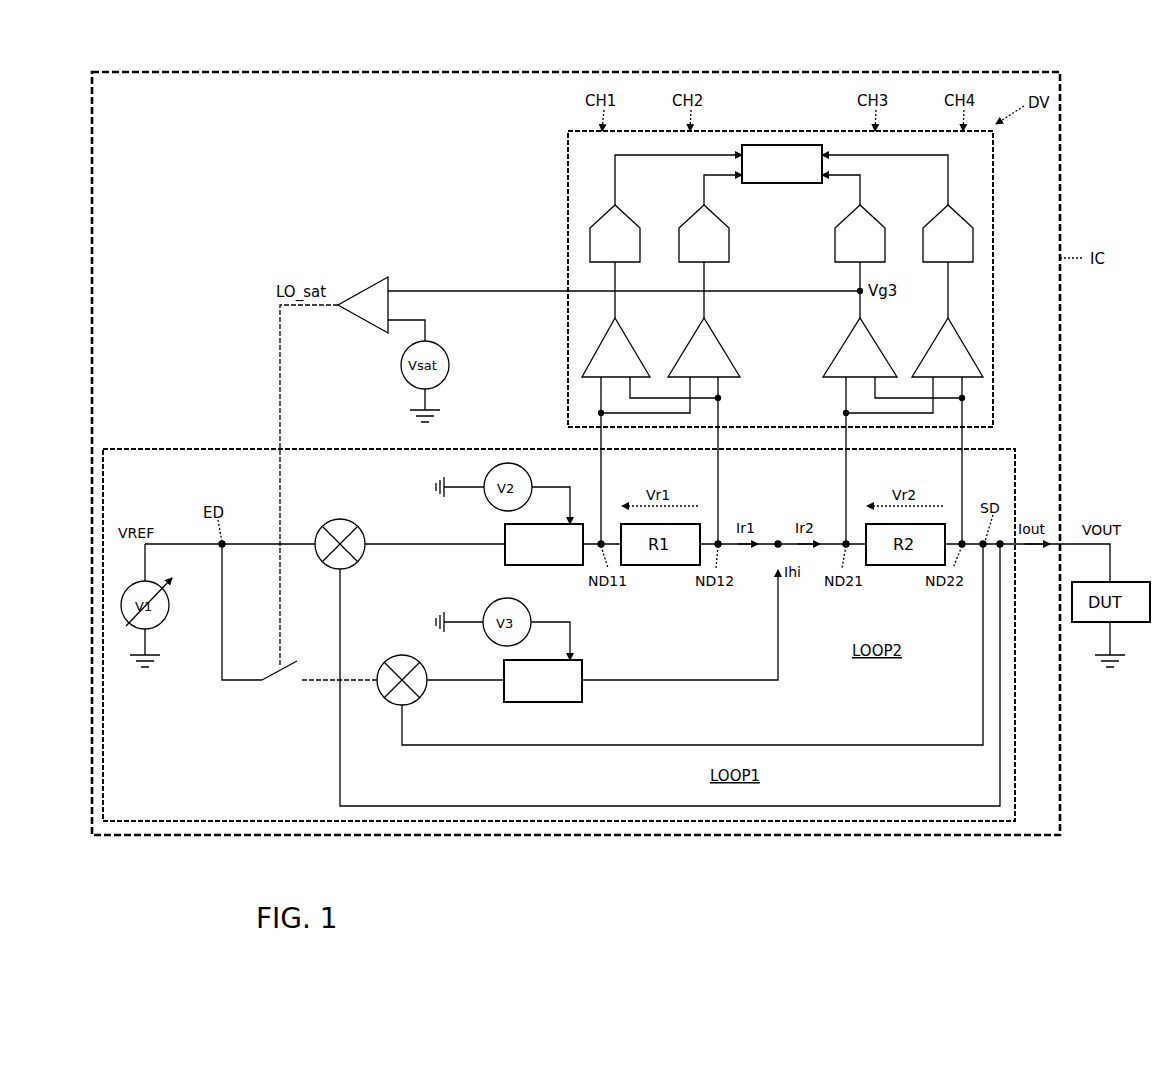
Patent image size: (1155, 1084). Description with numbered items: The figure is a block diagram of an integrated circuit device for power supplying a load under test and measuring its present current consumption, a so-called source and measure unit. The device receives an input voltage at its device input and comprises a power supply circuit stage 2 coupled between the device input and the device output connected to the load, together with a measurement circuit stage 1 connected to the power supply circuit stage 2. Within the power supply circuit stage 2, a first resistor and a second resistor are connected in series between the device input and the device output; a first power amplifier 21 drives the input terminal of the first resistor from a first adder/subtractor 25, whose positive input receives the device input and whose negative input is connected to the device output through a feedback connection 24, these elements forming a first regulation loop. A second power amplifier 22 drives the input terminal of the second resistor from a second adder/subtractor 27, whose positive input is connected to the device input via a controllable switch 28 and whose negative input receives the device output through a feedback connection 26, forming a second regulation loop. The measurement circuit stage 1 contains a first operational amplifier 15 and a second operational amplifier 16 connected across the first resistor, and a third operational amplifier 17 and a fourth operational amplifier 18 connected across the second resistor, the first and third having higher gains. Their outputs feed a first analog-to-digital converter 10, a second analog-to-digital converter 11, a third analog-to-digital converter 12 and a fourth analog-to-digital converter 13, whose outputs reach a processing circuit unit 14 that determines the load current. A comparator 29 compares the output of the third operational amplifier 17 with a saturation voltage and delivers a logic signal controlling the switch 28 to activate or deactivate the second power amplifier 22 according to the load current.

The measurement circuit stage 1 is at (566, 185).
The power supply circuit stage 2 is at (166, 447).
The first analog-to-digital converter 10 is at (628, 214).
The second analog-to-digital converter 11 is at (717, 214).
The third analog-to-digital converter 12 is at (846, 214).
The fourth analog-to-digital converter 13 is at (935, 214).
The processing circuit unit 14 is at (782, 164).
The first operational amplifier 15 is at (634, 347).
The second operational amplifier 16 is at (723, 347).
The third operational amplifier 17 is at (840, 347).
The fourth operational amplifier 18 is at (927, 347).
The first power amplifier 21 is at (544, 544).
The second power amplifier 22 is at (543, 681).
The feedback connection 24 is at (866, 804).
The first adder/subtractor 25 is at (343, 517).
The feedback connection 26 is at (866, 743).
The second adder/subtractor 27 is at (405, 654).
The controllable switch 28 is at (276, 690).
The comparator 29 is at (370, 277).